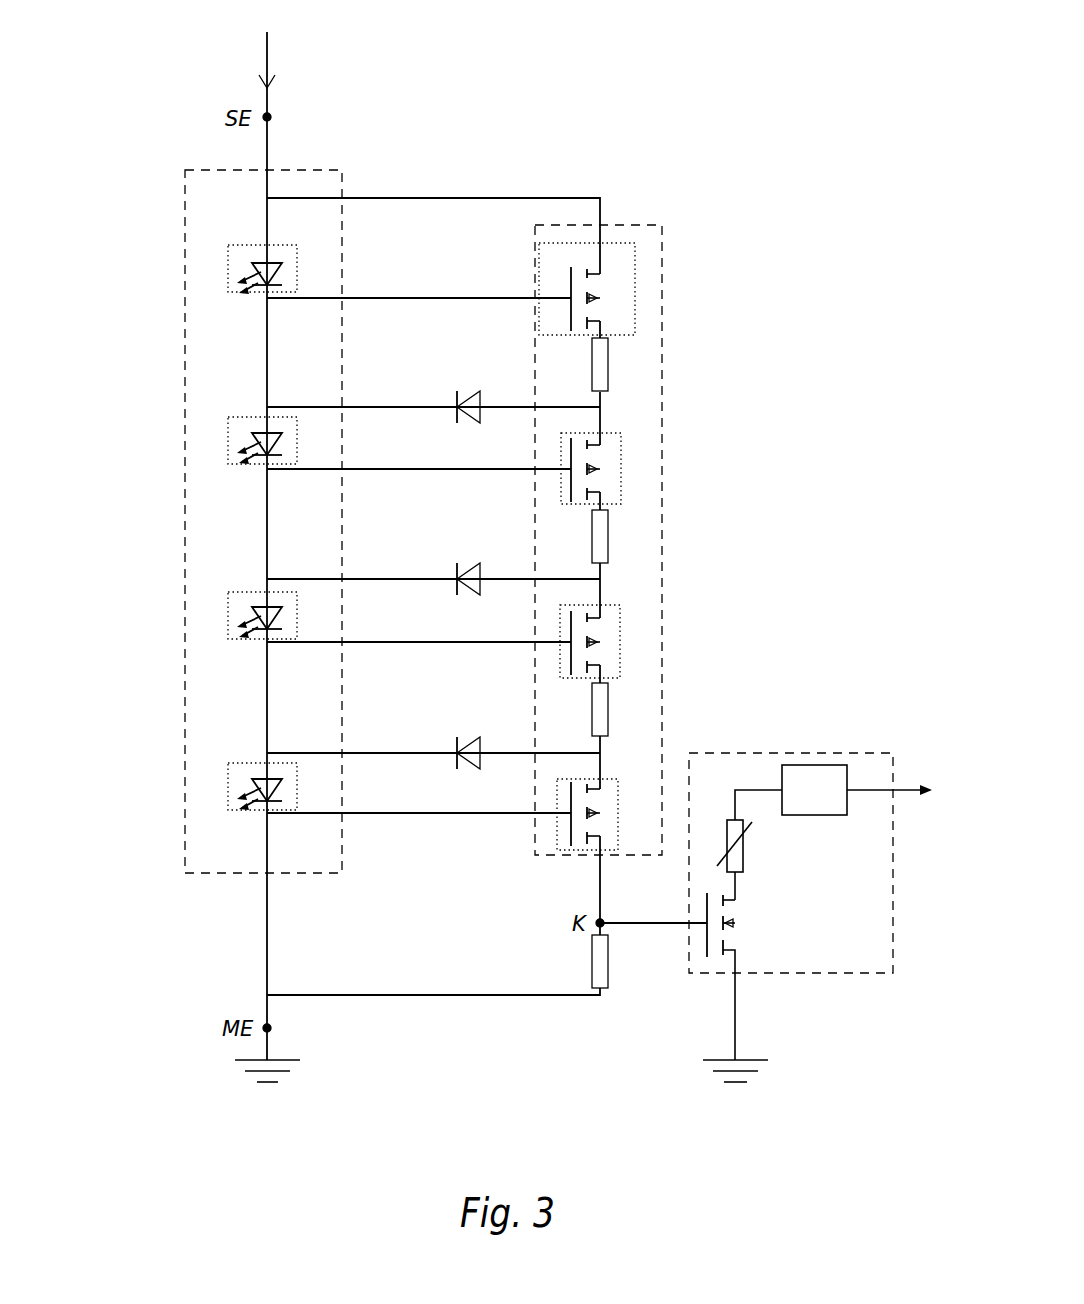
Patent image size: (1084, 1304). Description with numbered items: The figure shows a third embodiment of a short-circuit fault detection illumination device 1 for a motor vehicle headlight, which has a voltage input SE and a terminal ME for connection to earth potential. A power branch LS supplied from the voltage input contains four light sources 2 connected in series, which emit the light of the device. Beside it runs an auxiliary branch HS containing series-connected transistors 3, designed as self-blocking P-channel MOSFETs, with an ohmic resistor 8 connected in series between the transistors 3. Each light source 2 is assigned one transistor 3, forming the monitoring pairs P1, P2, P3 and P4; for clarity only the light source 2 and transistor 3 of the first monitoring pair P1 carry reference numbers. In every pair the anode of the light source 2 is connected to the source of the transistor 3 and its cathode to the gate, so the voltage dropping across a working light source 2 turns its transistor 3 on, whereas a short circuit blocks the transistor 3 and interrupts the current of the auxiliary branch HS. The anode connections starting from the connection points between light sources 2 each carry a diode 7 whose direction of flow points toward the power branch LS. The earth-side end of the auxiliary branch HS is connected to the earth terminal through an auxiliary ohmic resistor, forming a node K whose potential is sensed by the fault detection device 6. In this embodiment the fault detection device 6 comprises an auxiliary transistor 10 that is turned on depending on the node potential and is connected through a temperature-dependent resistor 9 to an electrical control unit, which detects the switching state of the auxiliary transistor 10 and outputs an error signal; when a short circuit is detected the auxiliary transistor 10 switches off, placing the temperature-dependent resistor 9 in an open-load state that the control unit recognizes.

The short-circuit fault detection illumination device 1 is at (420, 438).
The light source 2 is at (263, 260).
The transistor 3 is at (606, 284).
The fault detection device 6 is at (796, 906).
The diode 7 is at (457, 399).
The ohmic resistor 8 is at (608, 370).
The temperature-dependent resistor 9 is at (745, 857).
The auxiliary transistor 10 is at (707, 950).
The power branch LS is at (185, 340).
The auxiliary branch HS is at (662, 513).
The first monitoring pair P1 is at (540, 257).
The second monitoring pair P2 is at (560, 448).
The third monitoring pair P3 is at (560, 620).
The fourth monitoring pair P4 is at (560, 792).